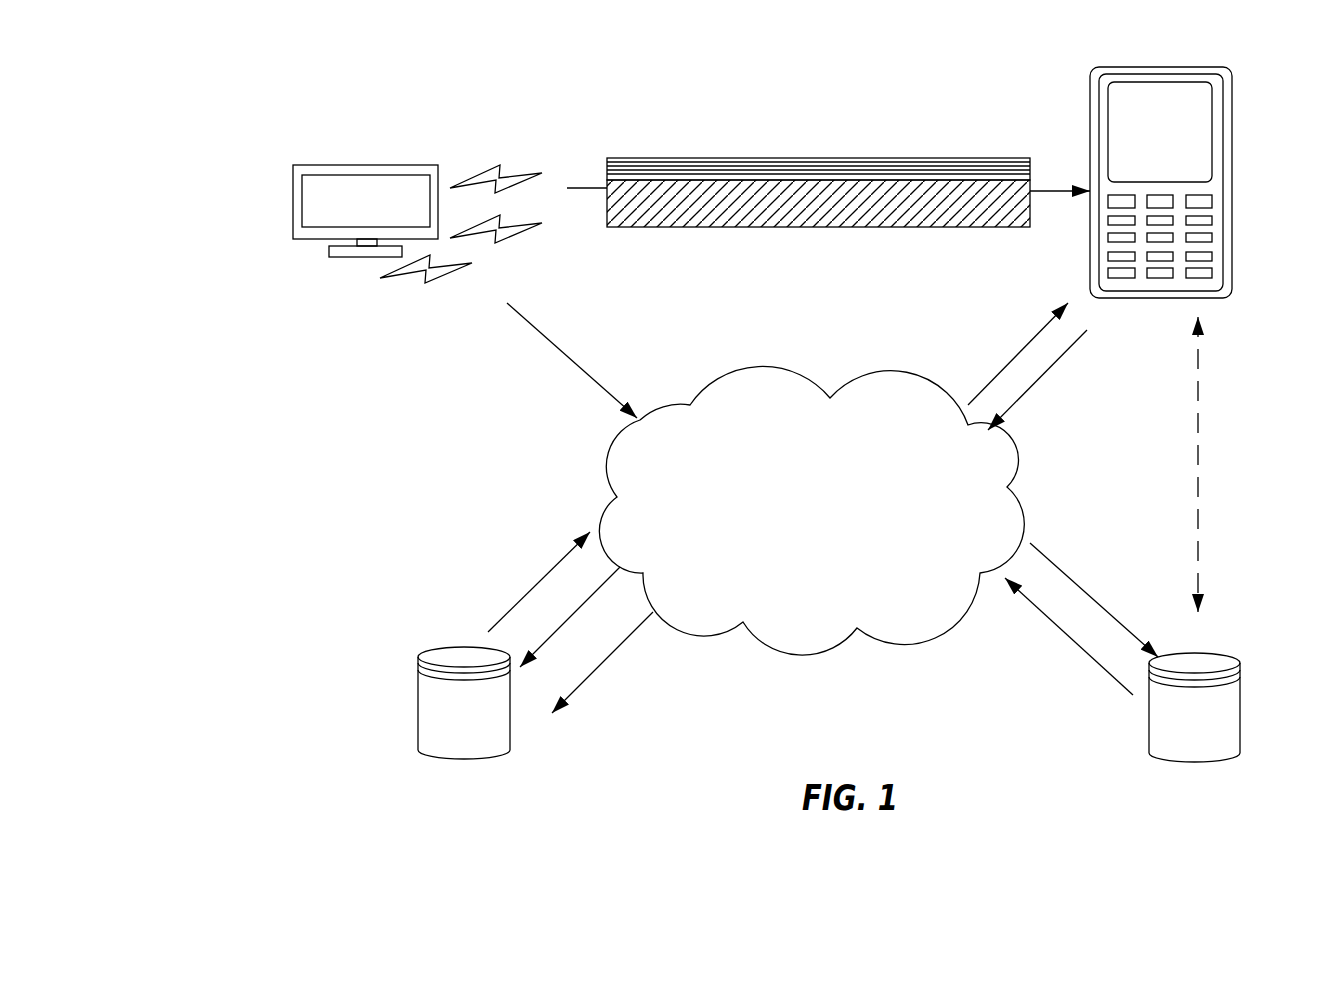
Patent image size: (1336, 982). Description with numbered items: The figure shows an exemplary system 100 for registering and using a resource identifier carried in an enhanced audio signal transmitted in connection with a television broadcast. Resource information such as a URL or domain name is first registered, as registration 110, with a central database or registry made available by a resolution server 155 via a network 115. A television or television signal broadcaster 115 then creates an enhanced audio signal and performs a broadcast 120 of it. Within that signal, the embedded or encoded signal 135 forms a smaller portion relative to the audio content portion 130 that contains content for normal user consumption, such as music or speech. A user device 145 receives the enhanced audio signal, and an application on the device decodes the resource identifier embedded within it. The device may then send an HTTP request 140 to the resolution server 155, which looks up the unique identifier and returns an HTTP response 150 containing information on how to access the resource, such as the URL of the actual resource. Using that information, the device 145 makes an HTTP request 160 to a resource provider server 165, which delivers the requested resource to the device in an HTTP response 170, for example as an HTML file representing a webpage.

The system 100 is at (159, 100).
The network / television signal broadcaster 115 is at (343, 165).
The broadcast 120 is at (503, 160).
The embedded or encoded signal 135 is at (822, 168).
The audio content portion 130 is at (857, 212).
The user device 145 is at (1230, 298).
The registration 110 is at (577, 398).
The HTTP response 150 is at (1014, 361).
The HTTP request 140 is at (1092, 400).
The HTTP request 160 is at (1133, 593).
The HTTP response 170 is at (1105, 640).
The resolution server 155 is at (468, 643).
The resource provider server 165 is at (1200, 652).